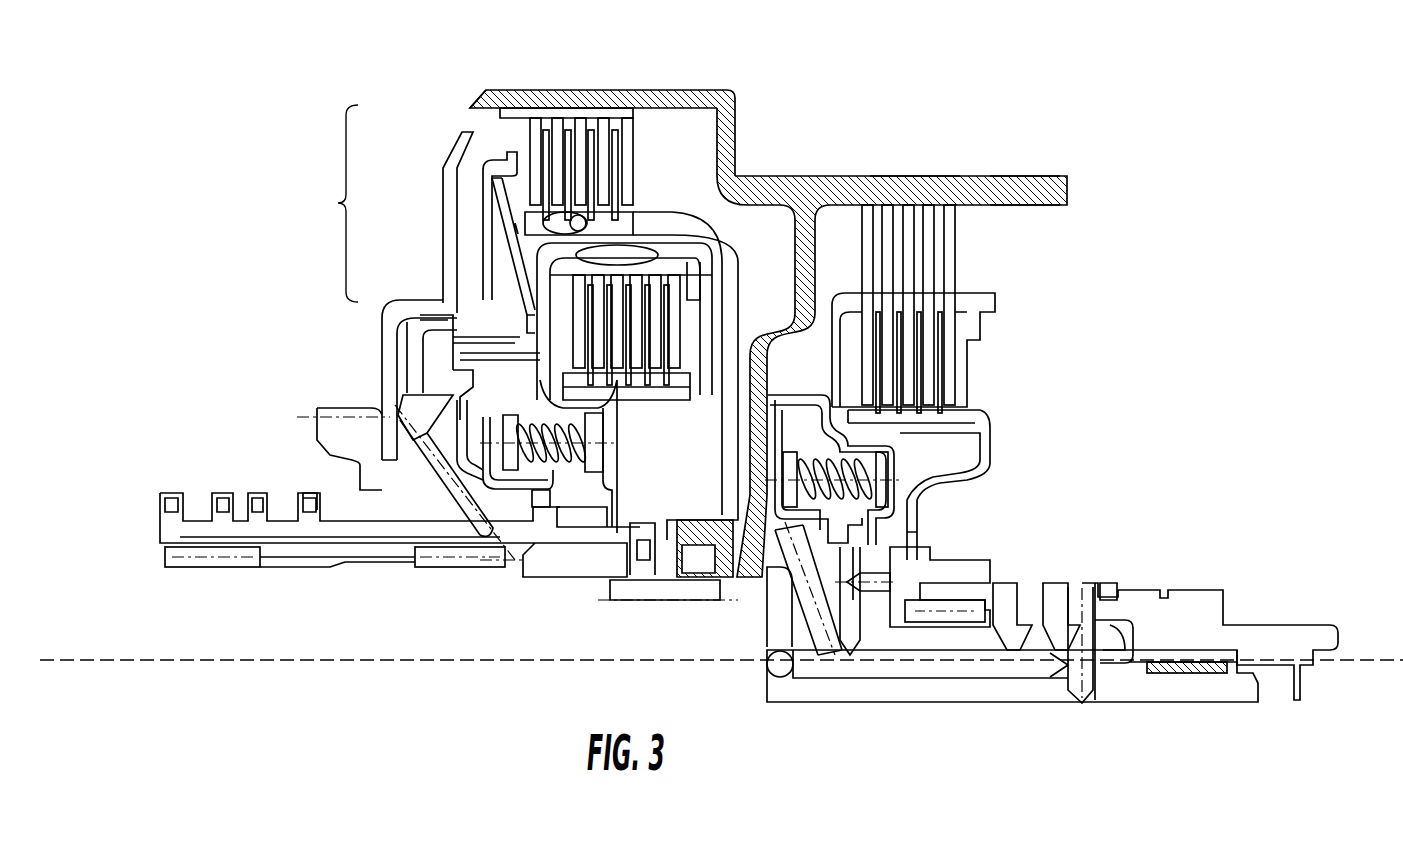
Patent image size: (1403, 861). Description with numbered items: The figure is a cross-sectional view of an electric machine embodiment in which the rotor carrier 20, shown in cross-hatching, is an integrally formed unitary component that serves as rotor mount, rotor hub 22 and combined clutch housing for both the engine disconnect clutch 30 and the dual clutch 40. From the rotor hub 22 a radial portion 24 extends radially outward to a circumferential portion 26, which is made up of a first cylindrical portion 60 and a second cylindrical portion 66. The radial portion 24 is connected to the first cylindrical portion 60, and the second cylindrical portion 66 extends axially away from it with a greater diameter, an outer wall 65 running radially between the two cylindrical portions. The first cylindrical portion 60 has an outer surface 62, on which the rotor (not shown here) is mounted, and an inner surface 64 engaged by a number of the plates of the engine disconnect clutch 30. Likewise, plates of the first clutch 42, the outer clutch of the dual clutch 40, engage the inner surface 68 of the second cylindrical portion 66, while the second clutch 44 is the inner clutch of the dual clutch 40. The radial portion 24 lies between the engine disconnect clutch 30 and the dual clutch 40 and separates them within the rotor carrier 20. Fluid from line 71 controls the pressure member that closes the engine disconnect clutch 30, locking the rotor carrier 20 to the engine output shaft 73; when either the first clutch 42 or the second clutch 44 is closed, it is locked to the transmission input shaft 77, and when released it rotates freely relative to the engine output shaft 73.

The rotor carrier 20 is at (807, 176).
The rotor hub 22 is at (780, 560).
The radial portion 24 is at (758, 325).
The circumferential portion 26 is at (1008, 176).
The engine disconnect clutch 30 is at (982, 360).
The dual clutch 40 is at (416, 332).
The first/outer clutch 42 is at (545, 108).
The second/inner clutch 44 is at (620, 355).
The first cylindrical portion 60 is at (1067, 192).
The outer surface 62 is at (912, 176).
The inner surface 64 is at (1015, 206).
The outer wall 65 is at (736, 128).
The second cylindrical portion 66 is at (604, 90).
The inner surface 68 is at (490, 114).
The line 71 is at (917, 673).
The engine output shaft 73 is at (1197, 590).
The transmission input shaft 77 is at (200, 598).